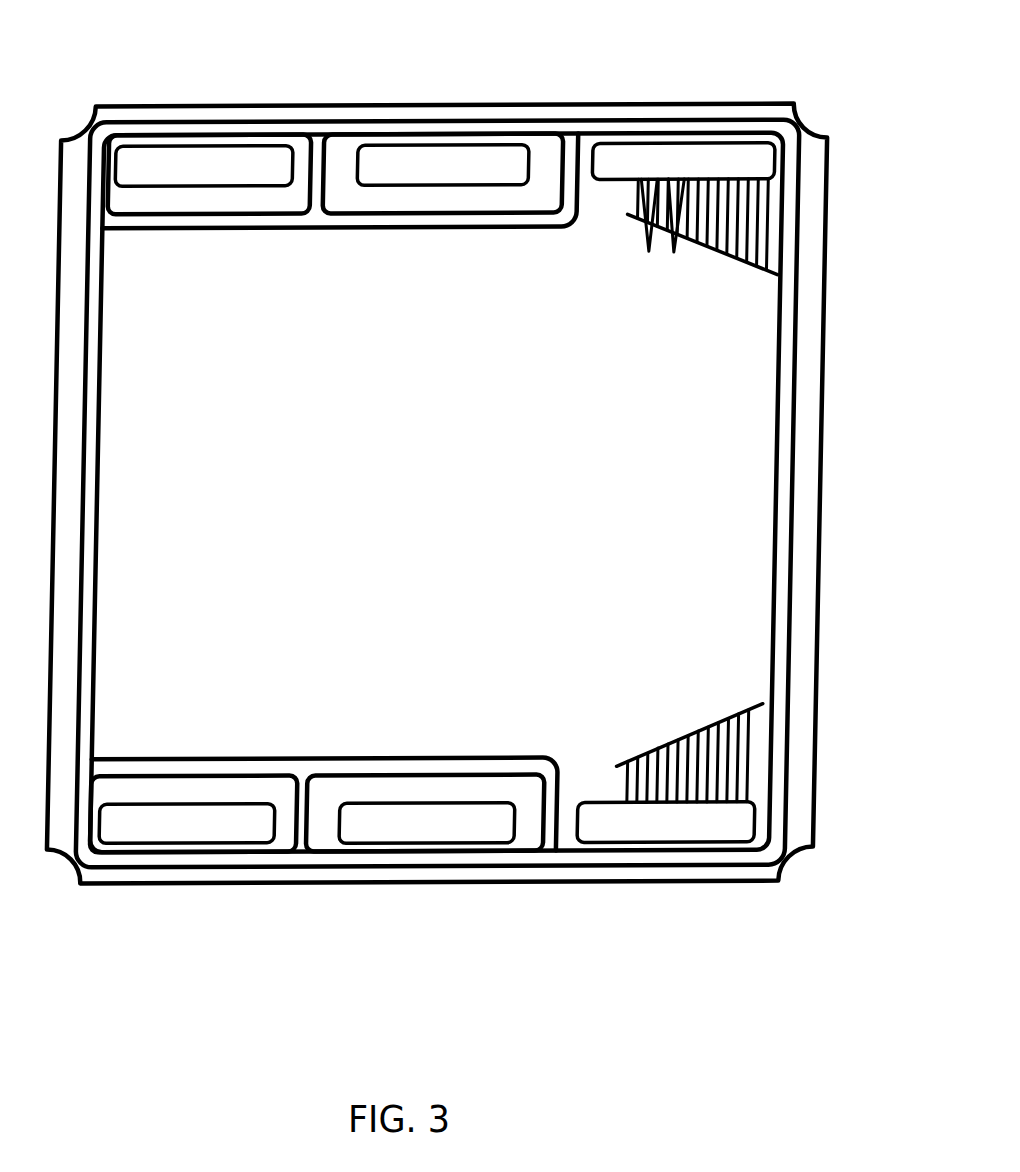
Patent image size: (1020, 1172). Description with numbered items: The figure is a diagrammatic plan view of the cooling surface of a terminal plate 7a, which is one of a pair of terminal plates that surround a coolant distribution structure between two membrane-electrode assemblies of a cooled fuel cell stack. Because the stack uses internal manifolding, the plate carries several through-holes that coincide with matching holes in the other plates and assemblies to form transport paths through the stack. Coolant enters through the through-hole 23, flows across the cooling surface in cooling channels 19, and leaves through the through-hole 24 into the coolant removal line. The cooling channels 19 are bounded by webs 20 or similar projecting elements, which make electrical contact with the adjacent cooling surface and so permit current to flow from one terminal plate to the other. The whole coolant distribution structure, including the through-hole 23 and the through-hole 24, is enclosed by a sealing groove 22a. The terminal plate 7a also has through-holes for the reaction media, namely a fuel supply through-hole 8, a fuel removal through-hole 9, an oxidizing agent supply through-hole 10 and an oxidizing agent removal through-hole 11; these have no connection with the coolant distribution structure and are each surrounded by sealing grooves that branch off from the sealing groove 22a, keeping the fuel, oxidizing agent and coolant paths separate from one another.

The terminal plate 7a is at (847, 258).
The through-hole for fuel supply 8 is at (172, 168).
The through-hole for fuel removal 9 is at (157, 828).
The through-hole for oxidizing agent supply 10 is at (400, 157).
The through-hole for oxidizing agent removal 11 is at (383, 820).
The cooling channels 19 is at (649, 234).
The webs 20 is at (685, 234).
The sealing groove 22a is at (787, 383).
The through-hole for coolant supply 23 is at (723, 160).
The through-hole for coolant removal 24 is at (678, 826).